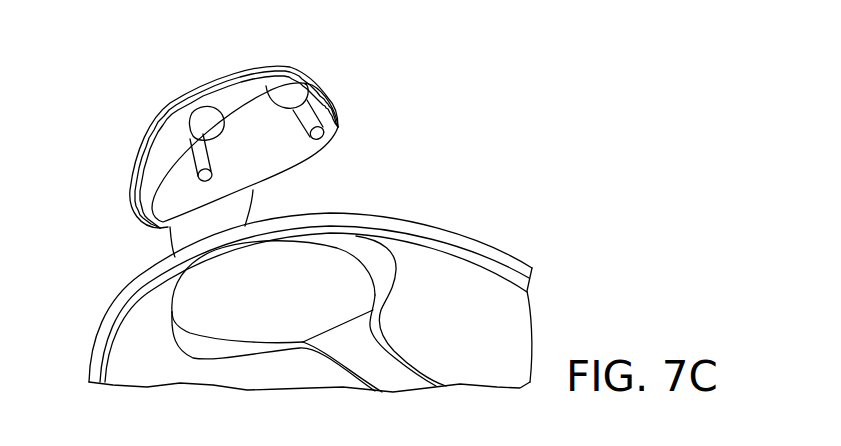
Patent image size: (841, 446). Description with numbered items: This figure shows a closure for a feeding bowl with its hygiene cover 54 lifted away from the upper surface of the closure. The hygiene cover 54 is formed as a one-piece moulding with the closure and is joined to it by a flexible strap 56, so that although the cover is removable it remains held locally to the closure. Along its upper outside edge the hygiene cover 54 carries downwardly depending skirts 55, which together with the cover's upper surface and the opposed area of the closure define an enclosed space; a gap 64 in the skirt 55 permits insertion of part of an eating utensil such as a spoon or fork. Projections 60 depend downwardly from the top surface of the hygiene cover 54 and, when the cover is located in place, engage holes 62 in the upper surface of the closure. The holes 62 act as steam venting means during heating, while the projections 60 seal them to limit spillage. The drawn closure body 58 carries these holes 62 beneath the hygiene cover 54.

The hygiene cover 54 is at (225, 88).
The skirts 55 is at (163, 164).
The gap 64 is at (255, 90).
The projections 60 is at (323, 116).
The flexible strap 56 is at (168, 237).
The body rim 58 is at (366, 250).
The holes 62 is at (360, 304).